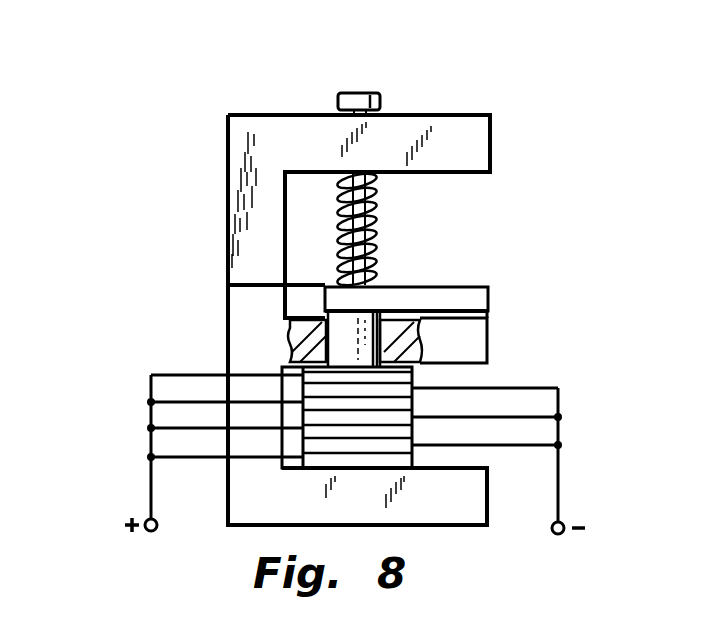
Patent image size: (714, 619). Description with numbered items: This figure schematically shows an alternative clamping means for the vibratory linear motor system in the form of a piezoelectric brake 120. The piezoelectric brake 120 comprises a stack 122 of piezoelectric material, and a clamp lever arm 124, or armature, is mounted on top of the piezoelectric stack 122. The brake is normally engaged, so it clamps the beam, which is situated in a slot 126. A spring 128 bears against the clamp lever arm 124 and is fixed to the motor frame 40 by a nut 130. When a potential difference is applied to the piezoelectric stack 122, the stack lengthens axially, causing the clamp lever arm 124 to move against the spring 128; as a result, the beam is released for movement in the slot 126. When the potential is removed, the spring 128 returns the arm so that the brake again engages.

The piezoelectric brake 120 is at (193, 208).
The motor frame 40 is at (490, 136).
The nut 130 is at (384, 93).
The spring 128 is at (378, 228).
The clamp lever arm 124 is at (489, 298).
The slot 126 is at (486, 316).
The stack 122 is at (406, 378).